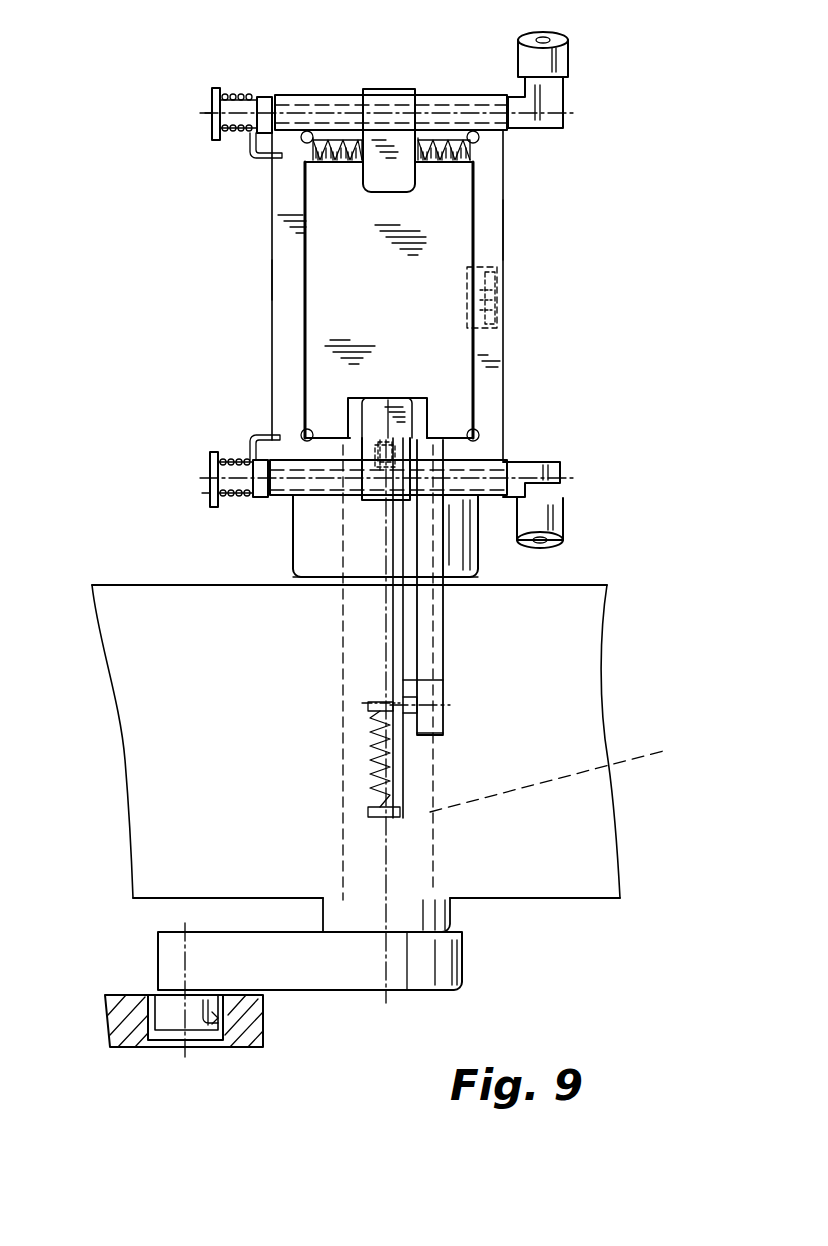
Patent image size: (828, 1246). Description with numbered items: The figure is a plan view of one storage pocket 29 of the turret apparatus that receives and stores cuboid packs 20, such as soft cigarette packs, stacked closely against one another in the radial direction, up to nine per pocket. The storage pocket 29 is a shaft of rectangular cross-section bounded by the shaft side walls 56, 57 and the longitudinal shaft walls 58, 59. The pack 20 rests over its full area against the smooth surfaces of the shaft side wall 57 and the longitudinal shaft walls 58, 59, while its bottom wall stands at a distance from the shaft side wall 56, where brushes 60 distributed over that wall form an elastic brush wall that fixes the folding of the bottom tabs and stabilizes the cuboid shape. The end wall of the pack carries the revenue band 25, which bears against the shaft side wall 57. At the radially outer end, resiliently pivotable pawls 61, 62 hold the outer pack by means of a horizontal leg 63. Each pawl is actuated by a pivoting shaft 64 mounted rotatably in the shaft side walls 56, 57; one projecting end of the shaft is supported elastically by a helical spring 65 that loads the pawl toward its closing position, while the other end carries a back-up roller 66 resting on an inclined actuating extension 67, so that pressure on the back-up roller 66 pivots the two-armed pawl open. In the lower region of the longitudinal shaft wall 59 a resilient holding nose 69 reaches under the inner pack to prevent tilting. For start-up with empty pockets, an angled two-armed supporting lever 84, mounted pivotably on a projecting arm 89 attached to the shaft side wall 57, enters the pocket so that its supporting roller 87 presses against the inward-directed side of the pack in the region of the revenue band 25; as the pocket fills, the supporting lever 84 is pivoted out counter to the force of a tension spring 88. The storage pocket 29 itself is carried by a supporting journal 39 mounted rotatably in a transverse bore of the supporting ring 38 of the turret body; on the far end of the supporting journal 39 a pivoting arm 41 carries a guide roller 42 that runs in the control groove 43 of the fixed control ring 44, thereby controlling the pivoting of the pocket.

The cuboid pack 20 is at (396, 304).
The revenue band 25 is at (422, 426).
The storage pocket 29 is at (272, 206).
The supporting ring 38 is at (577, 640).
The supporting journal 39 is at (567, 778).
The pivoting arm 41 is at (290, 968).
The guide roller 42 is at (175, 1020).
The control groove 43 is at (215, 1045).
The control ring 44 is at (135, 1040).
The shaft side wall 56 is at (327, 125).
The shaft side wall 57 is at (468, 455).
The longitudinal shaft wall 58 is at (285, 278).
The longitudinal shaft wall 59 is at (497, 233).
The brushes 60 is at (478, 153).
The pawl 61 is at (402, 90).
The pawl 62 is at (426, 413).
The horizontal leg 63 is at (395, 174).
The pivoting shaft 64 is at (475, 108).
The helical spring 65 is at (232, 97).
The back-up roller 66 is at (555, 58).
The actuating extension 67 is at (545, 97).
The holding nose 69 is at (475, 293).
The supporting lever 84 is at (392, 636).
The supporting roller 87 is at (380, 460).
The tension spring 88 is at (373, 762).
The projecting arm 89 is at (428, 615).